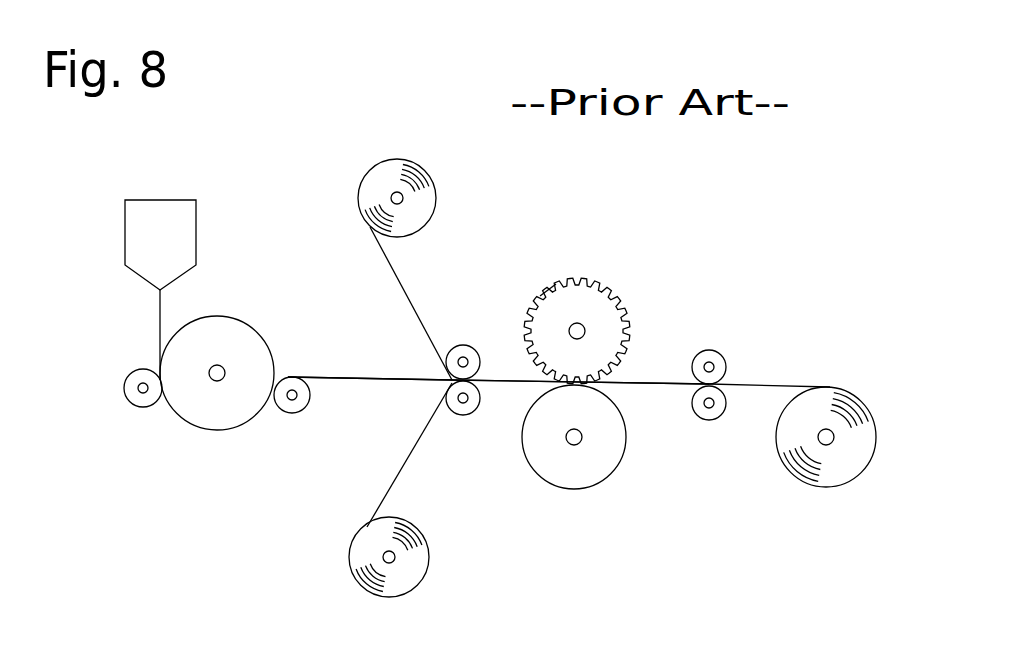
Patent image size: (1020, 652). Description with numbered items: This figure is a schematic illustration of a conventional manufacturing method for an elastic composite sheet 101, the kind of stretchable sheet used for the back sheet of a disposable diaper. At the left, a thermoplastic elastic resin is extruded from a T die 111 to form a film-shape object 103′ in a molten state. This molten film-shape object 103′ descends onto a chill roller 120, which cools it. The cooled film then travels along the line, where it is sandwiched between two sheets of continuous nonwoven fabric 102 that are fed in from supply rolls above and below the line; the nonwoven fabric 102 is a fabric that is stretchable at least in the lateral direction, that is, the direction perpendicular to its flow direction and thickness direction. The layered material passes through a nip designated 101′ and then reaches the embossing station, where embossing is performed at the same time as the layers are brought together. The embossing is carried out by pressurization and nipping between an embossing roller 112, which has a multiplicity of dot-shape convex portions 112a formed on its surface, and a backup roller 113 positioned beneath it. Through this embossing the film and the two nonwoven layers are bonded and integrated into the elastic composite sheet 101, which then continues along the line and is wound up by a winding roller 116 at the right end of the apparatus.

The T die 111 is at (162, 215).
The film-shape object 103′ is at (157, 330).
The chill roller 120 is at (236, 335).
The nonwoven fabric 102 is at (412, 302).
The nip rollers 101′ is at (493, 380).
The embossing roller 112 is at (590, 305).
The dot-shape convex portions 112a is at (558, 282).
The elastic composite sheet 101 is at (648, 380).
The backup roller 113 is at (592, 462).
The winding roller 116 is at (843, 395).